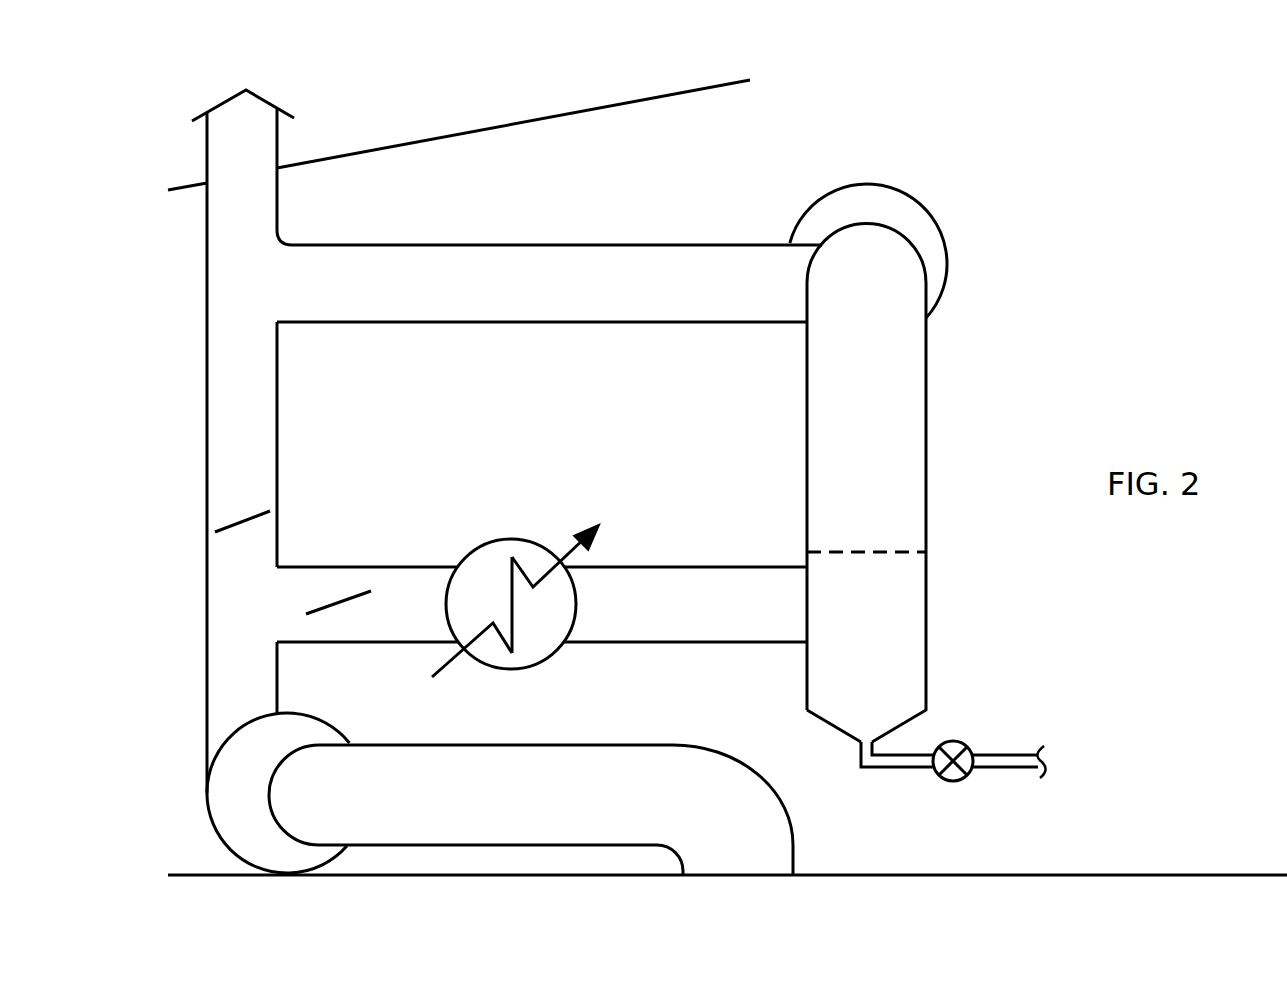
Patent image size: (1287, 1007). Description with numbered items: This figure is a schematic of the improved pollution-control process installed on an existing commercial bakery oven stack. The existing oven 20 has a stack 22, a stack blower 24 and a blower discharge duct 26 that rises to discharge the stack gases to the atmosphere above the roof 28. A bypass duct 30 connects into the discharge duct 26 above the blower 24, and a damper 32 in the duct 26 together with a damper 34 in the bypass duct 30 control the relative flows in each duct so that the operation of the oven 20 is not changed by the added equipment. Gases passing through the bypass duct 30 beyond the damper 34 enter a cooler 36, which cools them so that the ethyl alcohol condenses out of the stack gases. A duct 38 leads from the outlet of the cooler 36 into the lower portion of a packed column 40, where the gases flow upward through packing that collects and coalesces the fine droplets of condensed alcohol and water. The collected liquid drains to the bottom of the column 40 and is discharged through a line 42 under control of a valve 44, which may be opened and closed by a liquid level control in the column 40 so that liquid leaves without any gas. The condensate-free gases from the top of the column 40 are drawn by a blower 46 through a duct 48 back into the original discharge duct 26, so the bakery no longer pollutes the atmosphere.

The oven 20 is at (987, 877).
The stack 22 is at (538, 742).
The stack blower 24 is at (208, 823).
The blower discharge duct 26 is at (205, 650).
The roof 28 is at (338, 155).
The bypass duct 30 is at (372, 565).
The damper 32 is at (233, 522).
The damper 34 is at (318, 605).
The cooler 36 is at (502, 538).
The duct 38 is at (658, 567).
The packed column 40 is at (926, 463).
The line 42 is at (872, 768).
The valve 44 is at (955, 742).
The blower 46 is at (944, 223).
The duct 48 is at (488, 245).